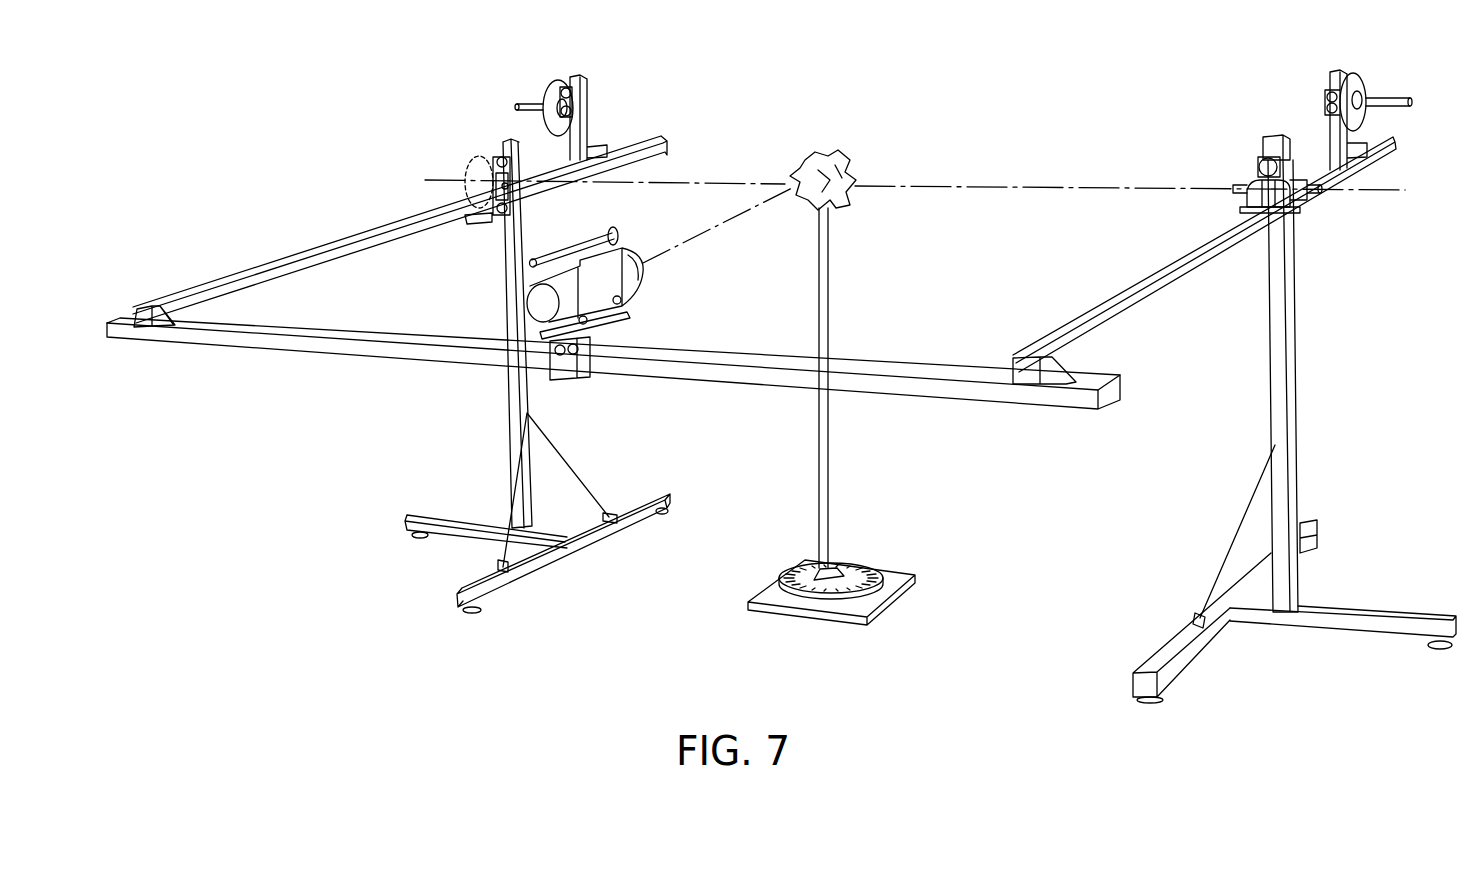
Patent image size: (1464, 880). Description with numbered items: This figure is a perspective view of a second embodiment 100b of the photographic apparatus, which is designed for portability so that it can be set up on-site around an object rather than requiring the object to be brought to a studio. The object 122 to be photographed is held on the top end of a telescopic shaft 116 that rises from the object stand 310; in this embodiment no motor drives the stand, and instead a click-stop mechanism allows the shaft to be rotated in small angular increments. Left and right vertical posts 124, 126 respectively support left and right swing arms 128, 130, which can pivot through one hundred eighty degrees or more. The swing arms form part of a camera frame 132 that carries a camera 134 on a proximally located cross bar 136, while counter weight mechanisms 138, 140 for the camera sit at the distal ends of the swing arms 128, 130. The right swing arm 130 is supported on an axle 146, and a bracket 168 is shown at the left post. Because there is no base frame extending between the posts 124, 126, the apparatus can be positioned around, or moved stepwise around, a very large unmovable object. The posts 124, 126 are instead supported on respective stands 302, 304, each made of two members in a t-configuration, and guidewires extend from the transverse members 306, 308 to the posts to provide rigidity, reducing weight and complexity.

The second embodiment 100b is at (350, 125).
The telescopic shaft 116 is at (831, 327).
The object 122 is at (832, 163).
The left vertical post 124 is at (508, 403).
The right vertical post 126 is at (1297, 380).
The left swing arm 128 is at (342, 240).
The right swing arm 130 is at (1128, 322).
The camera frame 132 is at (340, 357).
The camera 134 is at (636, 280).
The cross bar 136 is at (317, 330).
The counter weight mechanism 138 is at (603, 110).
The counter weight mechanism 140 is at (1312, 96).
The axle 146 is at (1323, 197).
The adjustment wheel bracket 168 is at (515, 182).
The right stand 302 is at (442, 549).
The left stand 304 is at (1303, 640).
The transverse member 306 is at (547, 562).
The transverse member 308 is at (1182, 667).
The object stand 310 is at (838, 497).